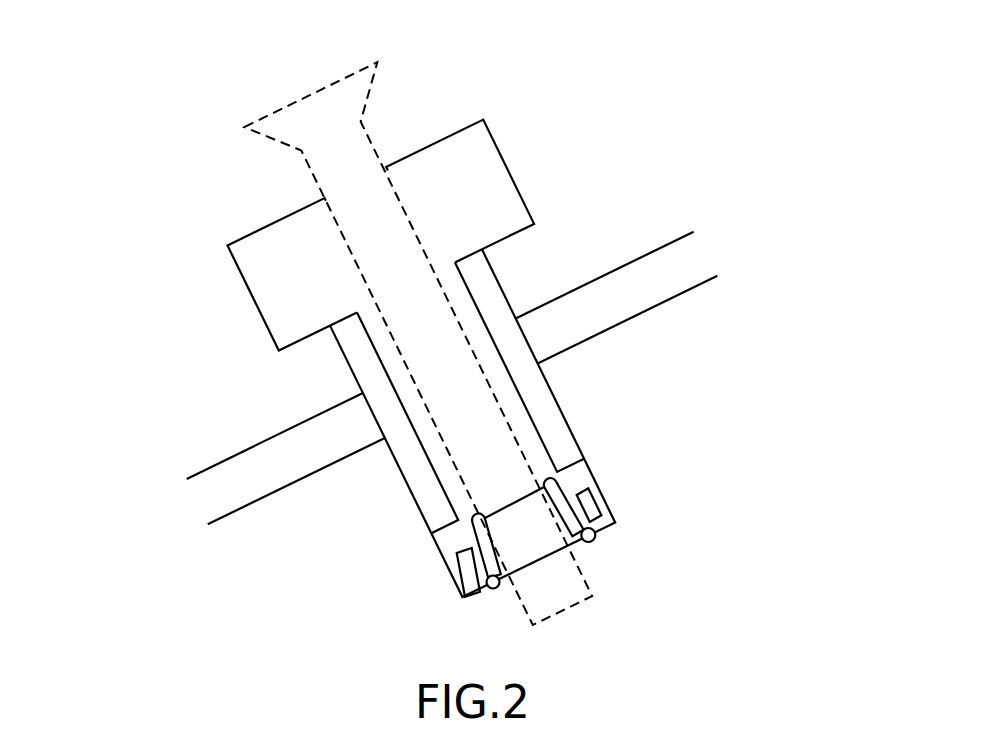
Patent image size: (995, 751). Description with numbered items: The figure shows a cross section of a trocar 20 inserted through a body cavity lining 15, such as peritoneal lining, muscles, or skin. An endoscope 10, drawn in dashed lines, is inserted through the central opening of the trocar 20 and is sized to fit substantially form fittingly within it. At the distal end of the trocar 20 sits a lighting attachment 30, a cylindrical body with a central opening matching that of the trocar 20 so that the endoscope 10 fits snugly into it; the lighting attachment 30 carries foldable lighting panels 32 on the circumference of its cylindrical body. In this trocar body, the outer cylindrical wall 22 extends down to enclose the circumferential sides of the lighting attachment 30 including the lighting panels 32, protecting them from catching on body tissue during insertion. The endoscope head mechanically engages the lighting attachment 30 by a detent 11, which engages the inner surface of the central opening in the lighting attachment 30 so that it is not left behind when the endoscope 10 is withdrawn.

The endoscope 10 is at (331, 92).
The detent 11 is at (535, 440).
The body cavity lining 15 is at (655, 267).
The trocar 20 is at (500, 187).
The outer cylindrical wall 22 is at (595, 468).
The lighting attachment 30 is at (575, 537).
The lighting panels 32 is at (597, 515).